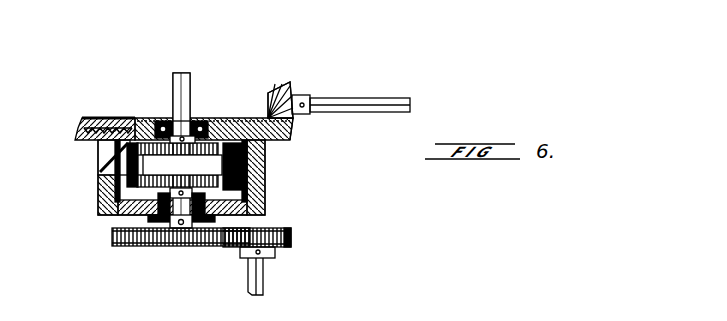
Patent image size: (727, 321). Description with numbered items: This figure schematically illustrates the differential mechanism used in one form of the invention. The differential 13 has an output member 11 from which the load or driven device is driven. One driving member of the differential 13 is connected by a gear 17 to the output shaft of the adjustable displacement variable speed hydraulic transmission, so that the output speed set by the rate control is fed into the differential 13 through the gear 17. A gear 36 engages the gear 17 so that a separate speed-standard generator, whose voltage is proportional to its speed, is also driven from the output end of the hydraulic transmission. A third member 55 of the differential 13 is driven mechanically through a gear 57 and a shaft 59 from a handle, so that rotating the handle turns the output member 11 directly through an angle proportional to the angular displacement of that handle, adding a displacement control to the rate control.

The output member 11 is at (190, 93).
The differential 13 is at (78, 157).
The gear 17 is at (140, 246).
The gear 36 is at (291, 239).
The third member 55 is at (105, 118).
The gear 57 is at (290, 86).
The shaft 59 is at (390, 98).